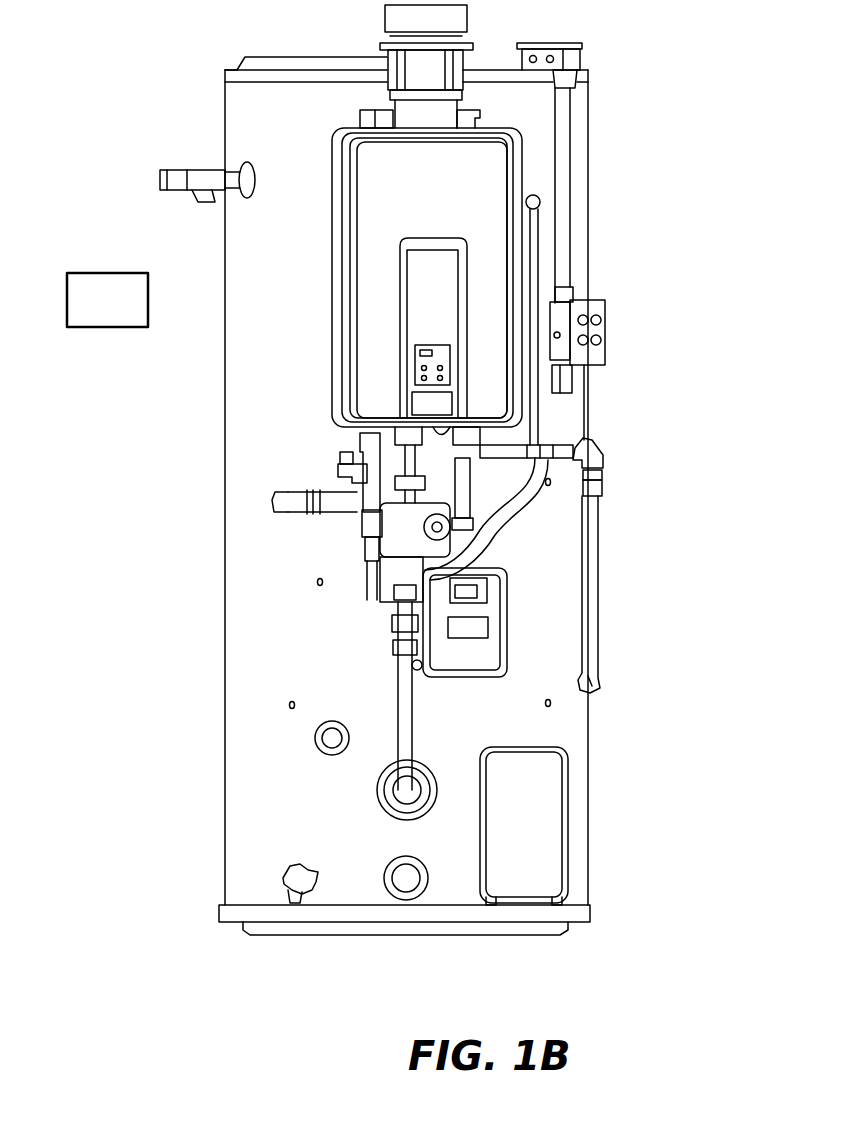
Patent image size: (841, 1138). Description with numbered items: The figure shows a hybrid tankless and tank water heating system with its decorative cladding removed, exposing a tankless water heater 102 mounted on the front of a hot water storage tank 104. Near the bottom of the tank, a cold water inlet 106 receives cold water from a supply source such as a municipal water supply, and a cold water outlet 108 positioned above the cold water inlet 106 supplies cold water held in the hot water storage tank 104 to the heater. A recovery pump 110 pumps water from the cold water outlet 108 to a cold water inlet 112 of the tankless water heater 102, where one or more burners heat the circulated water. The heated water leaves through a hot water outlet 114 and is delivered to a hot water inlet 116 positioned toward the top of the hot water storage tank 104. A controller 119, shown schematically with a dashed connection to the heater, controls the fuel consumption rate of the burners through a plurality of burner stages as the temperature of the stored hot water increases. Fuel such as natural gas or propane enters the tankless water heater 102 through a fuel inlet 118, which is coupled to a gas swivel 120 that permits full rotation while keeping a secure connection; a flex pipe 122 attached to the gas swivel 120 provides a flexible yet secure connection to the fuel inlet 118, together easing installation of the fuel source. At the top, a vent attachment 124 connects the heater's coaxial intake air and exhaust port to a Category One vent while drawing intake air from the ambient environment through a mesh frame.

The tankless water heater 102 is at (332, 173).
The hot water storage tank 104 is at (586, 84).
The cold water inlet 106 is at (410, 895).
The cold water outlet 108 is at (393, 797).
The recovery pump 110 is at (395, 536).
The cold water inlet 112 is at (375, 446).
The hot water outlet 114 is at (352, 460).
The hot water inlet 116 is at (545, 200).
The fuel inlet 118 is at (478, 447).
The controller 119 is at (333, 300).
The gas swivel 120 is at (605, 467).
The flex pipe 122 is at (594, 543).
The vent attachment 124 is at (383, 47).